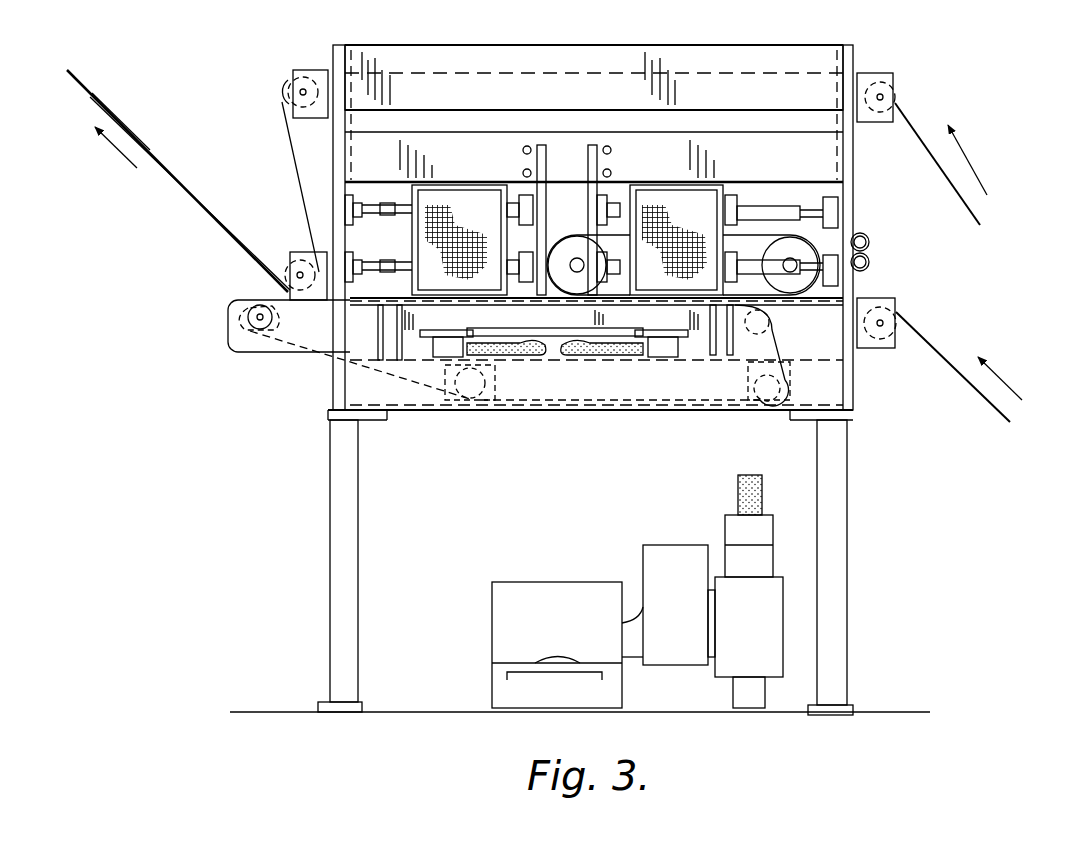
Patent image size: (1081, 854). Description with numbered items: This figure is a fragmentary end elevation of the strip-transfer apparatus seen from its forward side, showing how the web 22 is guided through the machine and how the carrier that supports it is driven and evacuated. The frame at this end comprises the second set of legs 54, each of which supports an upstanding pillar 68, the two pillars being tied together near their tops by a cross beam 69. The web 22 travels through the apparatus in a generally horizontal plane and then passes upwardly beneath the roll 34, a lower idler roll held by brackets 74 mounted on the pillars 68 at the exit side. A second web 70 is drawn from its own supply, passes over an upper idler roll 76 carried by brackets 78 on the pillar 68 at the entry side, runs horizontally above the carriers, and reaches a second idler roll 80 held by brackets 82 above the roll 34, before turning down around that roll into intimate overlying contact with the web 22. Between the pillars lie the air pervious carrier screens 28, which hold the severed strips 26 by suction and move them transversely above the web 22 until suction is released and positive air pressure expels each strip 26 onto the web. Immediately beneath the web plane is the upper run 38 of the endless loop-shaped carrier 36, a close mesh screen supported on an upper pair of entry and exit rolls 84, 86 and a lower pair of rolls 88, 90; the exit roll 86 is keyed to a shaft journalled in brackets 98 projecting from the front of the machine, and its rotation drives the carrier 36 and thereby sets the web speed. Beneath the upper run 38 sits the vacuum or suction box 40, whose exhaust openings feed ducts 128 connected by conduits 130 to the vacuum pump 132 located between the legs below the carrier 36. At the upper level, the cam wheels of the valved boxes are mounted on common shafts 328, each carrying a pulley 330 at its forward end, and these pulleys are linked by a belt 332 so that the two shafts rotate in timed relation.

The web 22 is at (168, 178).
The strips 26 is at (103, 50).
The air pervious carrier screen 28 is at (487, 202).
The roll 34 is at (285, 272).
The carrier 36 is at (618, 408).
The upper run 38 is at (520, 304).
The vacuum or suction box 40 is at (590, 338).
The second set of legs 54 is at (335, 506).
The pillar 68 is at (337, 146).
The cross beam 69 is at (722, 57).
The web 70 is at (192, 150).
The brackets 74 is at (296, 252).
The upper idler roll 76 is at (905, 100).
The brackets 78 is at (866, 122).
The second idler roll 80 is at (288, 93).
The brackets 82 is at (292, 104).
The entry roll 84 is at (775, 338).
The exit roll 86 is at (228, 337).
The roll 88 is at (755, 380).
The roll 90 is at (490, 408).
The brackets 98 is at (252, 352).
The duct 128 is at (437, 336).
The conduit 130 is at (512, 357).
The vacuum pump 132 is at (566, 584).
The common shaft 328 is at (805, 262).
The pulley 330 is at (577, 248).
The belt 332 is at (586, 220).